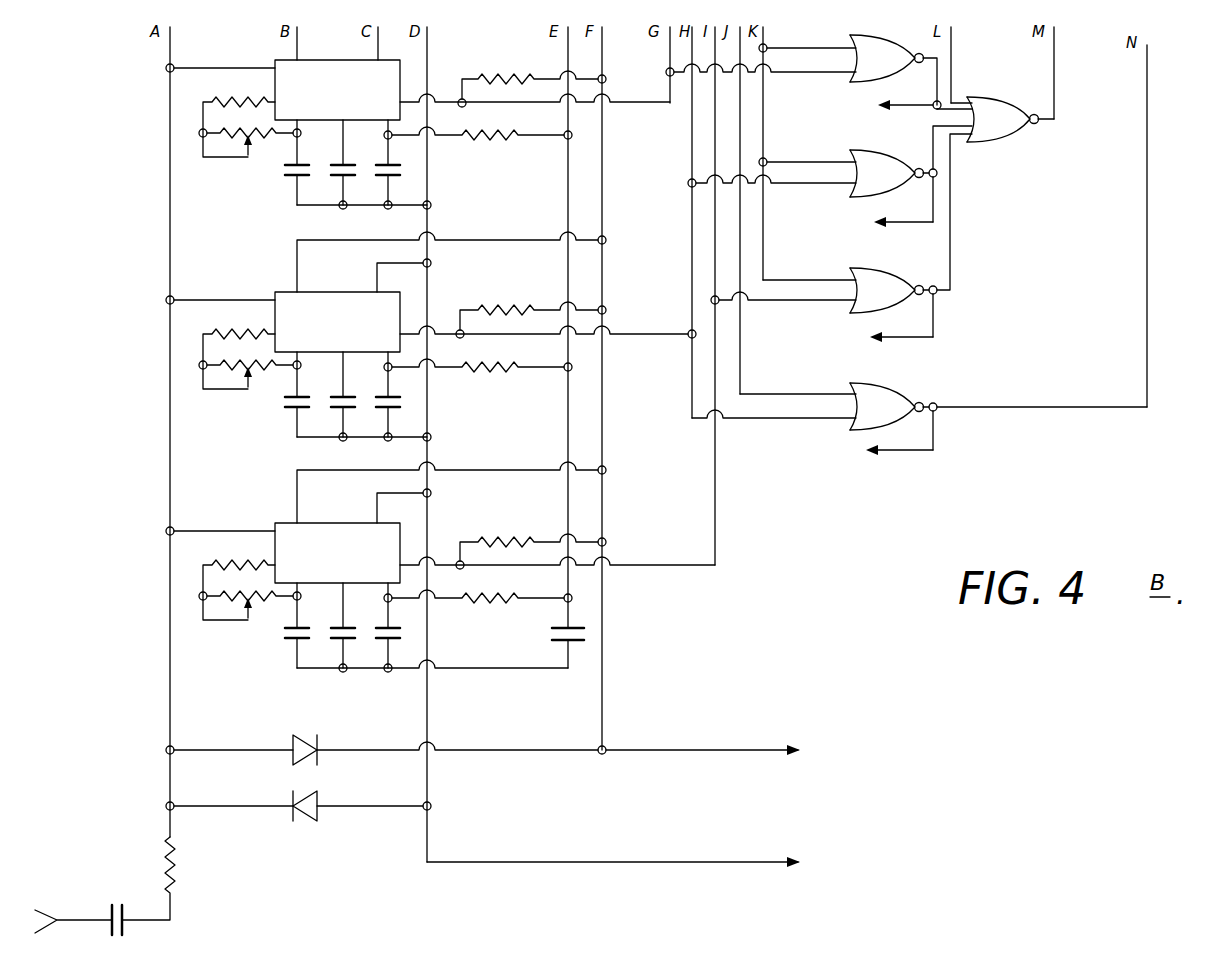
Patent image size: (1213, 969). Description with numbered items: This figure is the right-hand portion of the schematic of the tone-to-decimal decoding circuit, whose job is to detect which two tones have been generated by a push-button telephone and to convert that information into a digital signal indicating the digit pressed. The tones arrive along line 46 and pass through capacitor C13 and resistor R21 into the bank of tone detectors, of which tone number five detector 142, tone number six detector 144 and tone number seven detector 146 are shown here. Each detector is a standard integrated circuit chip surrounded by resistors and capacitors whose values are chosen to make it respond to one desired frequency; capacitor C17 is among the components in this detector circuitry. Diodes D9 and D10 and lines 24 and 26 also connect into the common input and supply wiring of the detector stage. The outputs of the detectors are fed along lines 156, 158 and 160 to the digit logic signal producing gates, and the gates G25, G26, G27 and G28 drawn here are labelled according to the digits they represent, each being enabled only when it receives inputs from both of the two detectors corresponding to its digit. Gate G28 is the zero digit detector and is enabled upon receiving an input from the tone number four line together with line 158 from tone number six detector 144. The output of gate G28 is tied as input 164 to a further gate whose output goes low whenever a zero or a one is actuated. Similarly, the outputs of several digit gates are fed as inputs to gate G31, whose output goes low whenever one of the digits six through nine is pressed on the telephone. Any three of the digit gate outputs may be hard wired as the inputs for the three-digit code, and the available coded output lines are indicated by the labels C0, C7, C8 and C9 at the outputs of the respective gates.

The tone #5 detector 142 is at (283, 60).
The tone #6 detector 144 is at (283, 292).
The tone #7 detector 146 is at (283, 523).
The output line of tone #5 detector 156 is at (630, 104).
The output line of tone #6 detector 158 is at (640, 336).
The output line of tone #7 detector 160 is at (643, 568).
The input to gate G29 from gate G28 164 is at (1048, 409).
The digit logic signal producing gate G25 is at (848, 84).
The digit logic signal producing gate G26 is at (850, 199).
The digit logic signal producing gate G27 is at (858, 315).
The "0" digit detector gate G28 is at (860, 432).
The gate G31 is at (1004, 144).
The coded output line C7 is at (912, 108).
The coded output line C8 is at (912, 224).
The coded output line C9 is at (914, 339).
The coded output line C0 is at (903, 452).
The capacitor C17 is at (577, 642).
The capacitor C13 is at (124, 932).
The resistor R21 is at (172, 868).
The diode D9 is at (302, 735).
The diode D10 is at (300, 823).
The line 24 is at (735, 748).
The line 26 is at (735, 860).
The tone line 46 is at (57, 919).